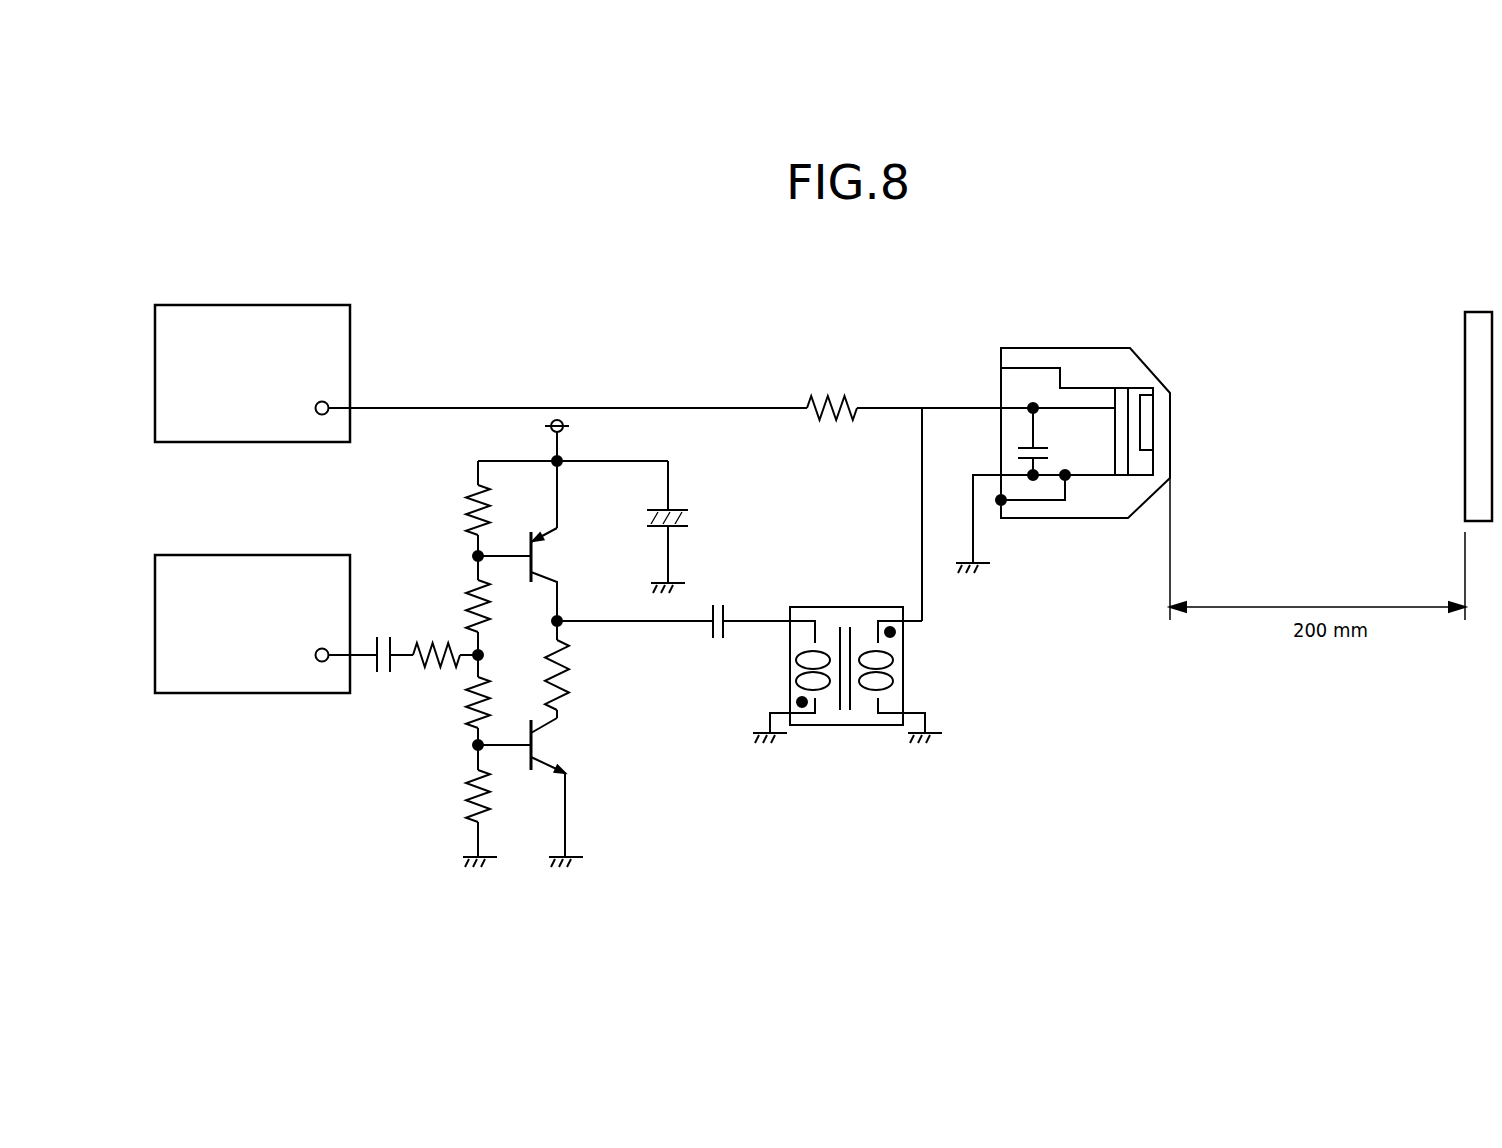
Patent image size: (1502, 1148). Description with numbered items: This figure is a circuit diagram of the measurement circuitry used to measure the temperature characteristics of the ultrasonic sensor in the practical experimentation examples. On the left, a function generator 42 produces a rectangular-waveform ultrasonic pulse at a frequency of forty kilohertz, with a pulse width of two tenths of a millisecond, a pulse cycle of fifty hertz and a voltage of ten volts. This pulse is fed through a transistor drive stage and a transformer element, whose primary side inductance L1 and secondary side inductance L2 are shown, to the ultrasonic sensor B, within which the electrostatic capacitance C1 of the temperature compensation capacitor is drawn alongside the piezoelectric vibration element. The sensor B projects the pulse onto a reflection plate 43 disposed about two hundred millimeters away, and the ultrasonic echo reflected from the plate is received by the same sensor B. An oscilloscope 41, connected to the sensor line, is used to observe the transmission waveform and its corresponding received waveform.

The oscilloscope 41 is at (247, 305).
The function generator 42 is at (240, 693).
The reflection plate 43 is at (1480, 312).
The ultrasonic sensor B is at (1069, 427).
The electrostatic capacitance of temperature compensation capacitor C1 is at (1053, 444).
The primary side inductance L1 is at (797, 676).
The secondary side inductance L2 is at (895, 668).